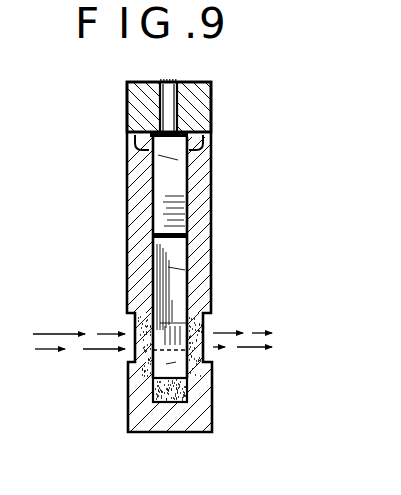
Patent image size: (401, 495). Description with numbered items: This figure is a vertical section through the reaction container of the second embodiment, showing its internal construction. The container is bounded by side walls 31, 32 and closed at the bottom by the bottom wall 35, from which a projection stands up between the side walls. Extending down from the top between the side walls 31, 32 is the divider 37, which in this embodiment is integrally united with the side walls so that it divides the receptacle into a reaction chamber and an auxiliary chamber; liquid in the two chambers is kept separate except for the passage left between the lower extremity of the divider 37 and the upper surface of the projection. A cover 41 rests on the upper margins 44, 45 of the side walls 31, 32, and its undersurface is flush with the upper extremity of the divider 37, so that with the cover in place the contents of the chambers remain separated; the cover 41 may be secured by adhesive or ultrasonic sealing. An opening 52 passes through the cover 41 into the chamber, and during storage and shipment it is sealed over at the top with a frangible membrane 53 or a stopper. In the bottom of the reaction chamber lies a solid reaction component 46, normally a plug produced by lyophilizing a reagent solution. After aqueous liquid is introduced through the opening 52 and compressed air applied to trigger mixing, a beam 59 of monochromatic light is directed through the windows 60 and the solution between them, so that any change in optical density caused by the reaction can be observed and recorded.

The side wall 31 is at (212, 258).
The side wall 32 is at (127, 264).
The bottom wall 35 is at (152, 433).
The divider 37 is at (168, 253).
The cover 41 is at (203, 104).
The upper margin of side wall 44 is at (200, 149).
The upper margin of side wall 45 is at (131, 152).
The solid reaction component 46 is at (183, 388).
The opening 52 is at (163, 106).
The frangible membrane 53 is at (167, 81).
The beam of monochromatic light 59 is at (100, 351).
The window 60 is at (222, 323).